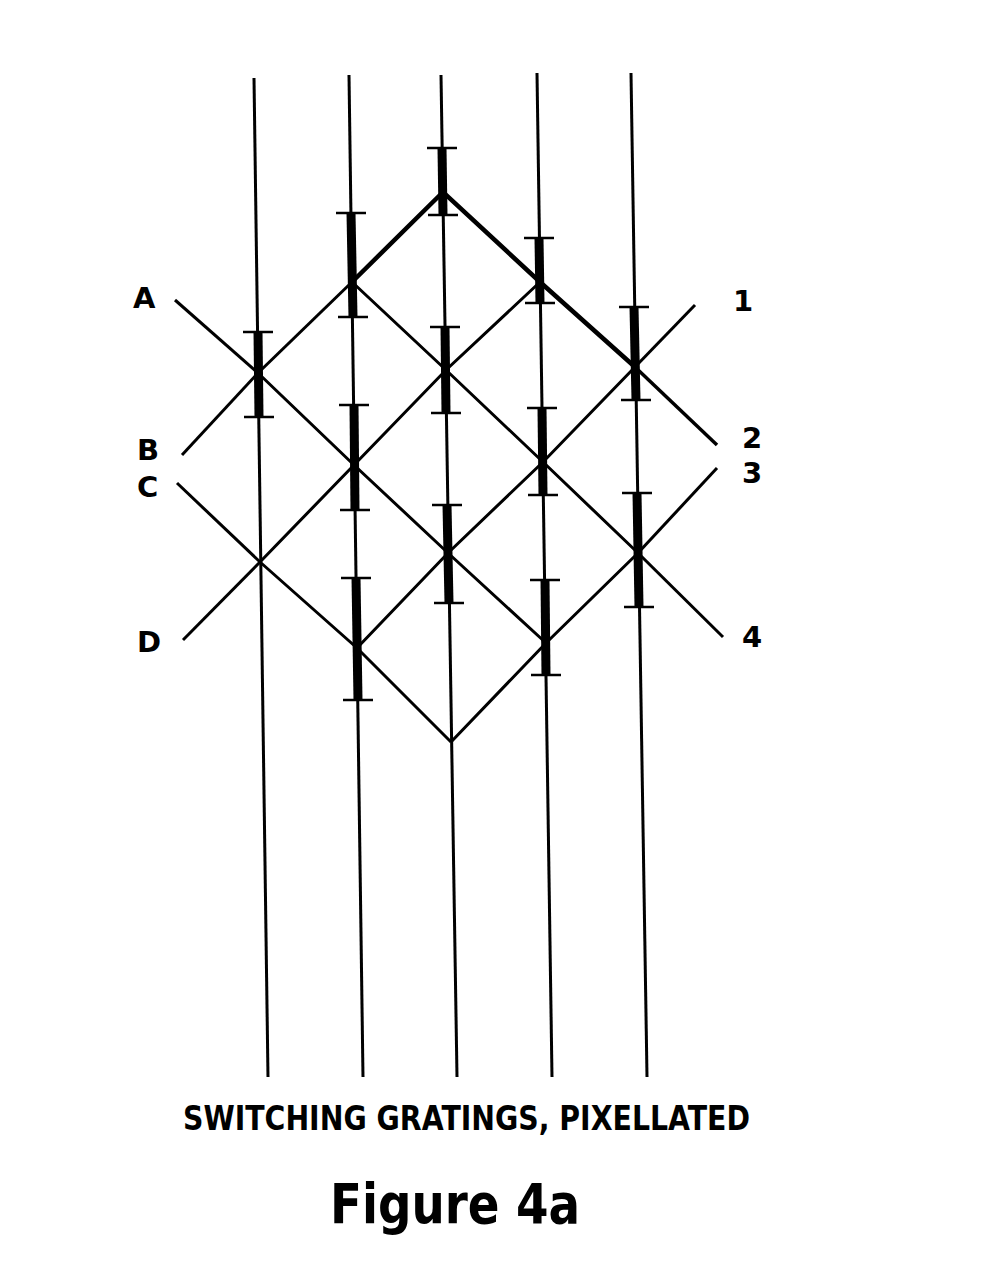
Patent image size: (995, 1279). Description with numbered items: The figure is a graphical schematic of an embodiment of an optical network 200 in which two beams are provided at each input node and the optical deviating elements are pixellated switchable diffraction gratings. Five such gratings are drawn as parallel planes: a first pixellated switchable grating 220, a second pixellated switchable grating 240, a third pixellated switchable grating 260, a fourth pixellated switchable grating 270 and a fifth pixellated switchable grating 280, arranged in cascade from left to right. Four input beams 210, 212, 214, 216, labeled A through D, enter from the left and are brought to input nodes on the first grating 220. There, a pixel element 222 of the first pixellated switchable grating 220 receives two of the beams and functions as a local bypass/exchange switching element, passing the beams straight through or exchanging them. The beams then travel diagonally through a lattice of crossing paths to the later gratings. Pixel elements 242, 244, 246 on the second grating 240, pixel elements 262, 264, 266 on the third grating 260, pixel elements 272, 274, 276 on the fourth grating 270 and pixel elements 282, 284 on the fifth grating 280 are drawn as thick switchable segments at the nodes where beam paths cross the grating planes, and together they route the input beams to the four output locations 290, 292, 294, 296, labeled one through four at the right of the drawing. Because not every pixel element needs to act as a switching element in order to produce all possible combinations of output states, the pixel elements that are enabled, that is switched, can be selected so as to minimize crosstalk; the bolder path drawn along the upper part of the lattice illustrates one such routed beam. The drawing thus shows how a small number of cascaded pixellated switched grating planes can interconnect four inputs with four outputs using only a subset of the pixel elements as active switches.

The optical network 200 is at (336, 371).
The input beam 210 is at (200, 323).
The input beam 212 is at (202, 432).
The input beam 214 is at (205, 513).
The input beam 216 is at (217, 607).
The first pixellated switchable grating 220 is at (266, 932).
The pixel element 222 is at (268, 347).
The second pixellated switchable grating 240 is at (360, 932).
The pixel element 242 is at (355, 242).
The pixel element 244 is at (358, 430).
The pixel element 246 is at (360, 613).
The third pixellated switchable grating 260 is at (452, 930).
The pixel element 262 is at (445, 167).
The pixel element 264 is at (448, 350).
The pixel element 266 is at (457, 523).
The fourth pixellated switchable grating 270 is at (548, 930).
The pixel element 272 is at (543, 252).
The pixel element 274 is at (550, 422).
The pixel element 276 is at (553, 605).
The fifth pixellated switchable grating 280 is at (643, 925).
The pixel element 282 is at (630, 327).
The pixel element 284 is at (633, 520).
The output location 290 is at (680, 317).
The output location 292 is at (685, 417).
The output location 294 is at (690, 500).
The output location 296 is at (690, 607).